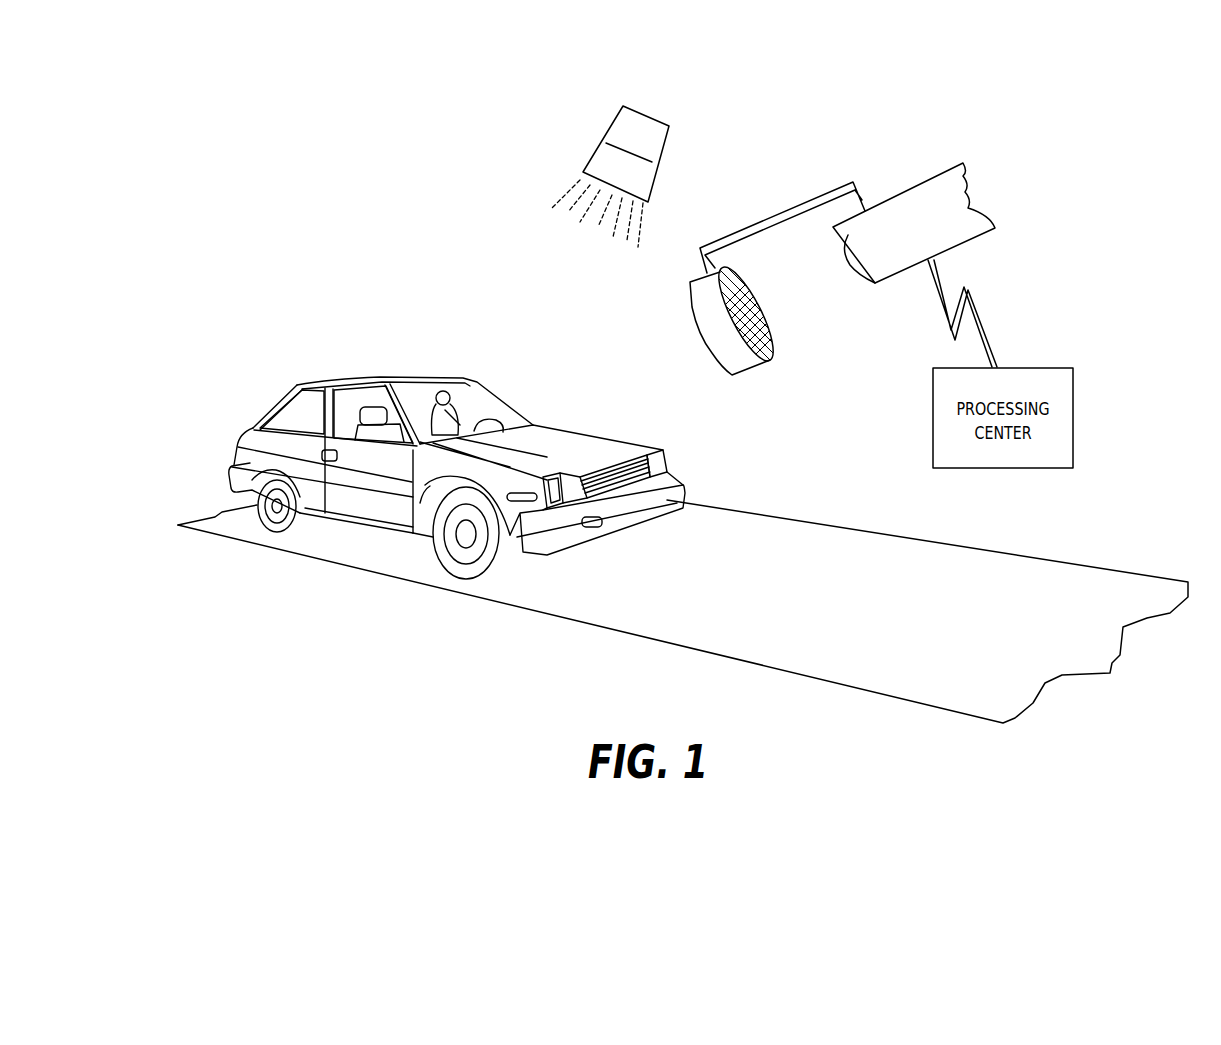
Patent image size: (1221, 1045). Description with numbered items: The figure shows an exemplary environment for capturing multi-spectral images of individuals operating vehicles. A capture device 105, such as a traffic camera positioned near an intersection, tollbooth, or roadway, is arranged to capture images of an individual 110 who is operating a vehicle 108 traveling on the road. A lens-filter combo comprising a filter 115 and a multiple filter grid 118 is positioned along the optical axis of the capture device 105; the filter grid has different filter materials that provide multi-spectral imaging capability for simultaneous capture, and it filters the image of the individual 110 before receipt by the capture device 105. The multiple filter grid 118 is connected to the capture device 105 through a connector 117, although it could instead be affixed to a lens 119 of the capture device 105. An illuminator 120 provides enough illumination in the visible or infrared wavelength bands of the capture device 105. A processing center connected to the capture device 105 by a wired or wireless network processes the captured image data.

The capture device 105 is at (910, 192).
The vehicle 108 is at (578, 433).
The individual 110 is at (470, 400).
The filter 115 is at (694, 280).
The connector 117 is at (778, 210).
The multiple filter grid 118 is at (760, 318).
The lens 119 is at (848, 262).
The illuminator 120 is at (613, 125).